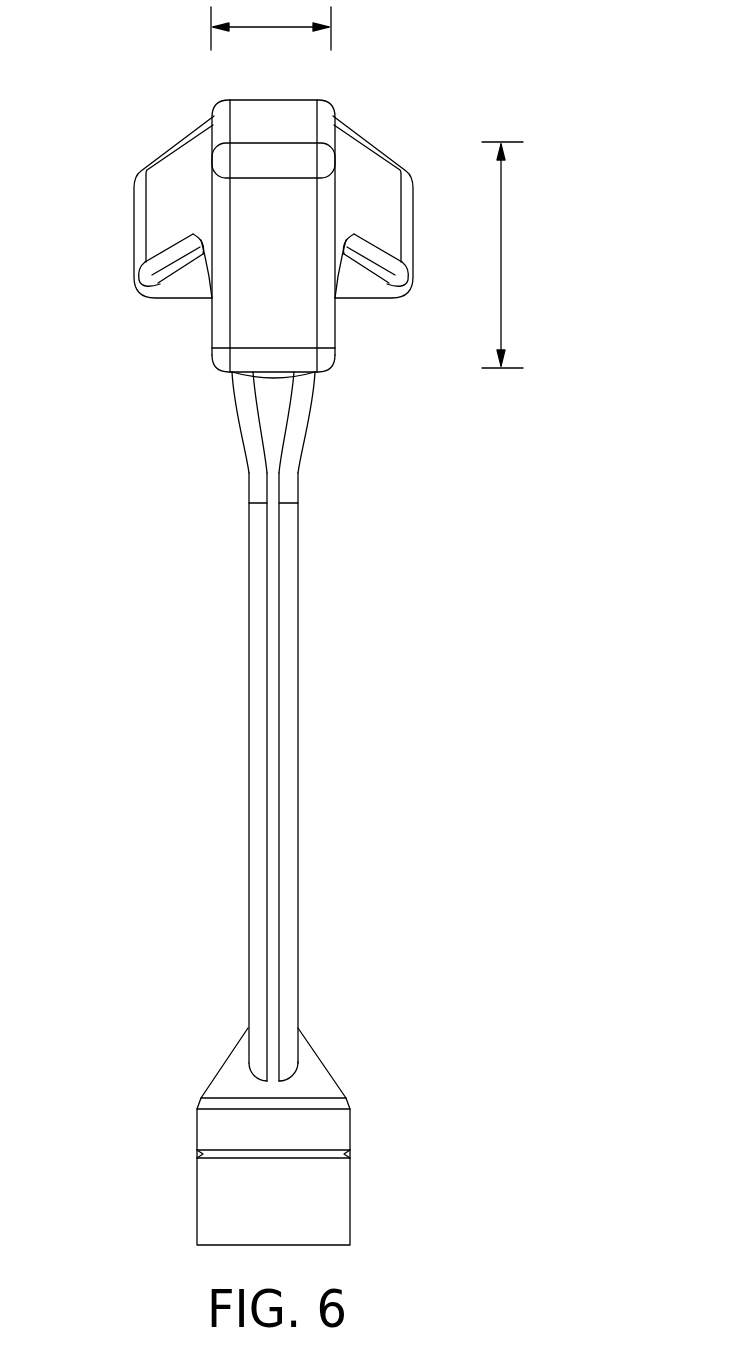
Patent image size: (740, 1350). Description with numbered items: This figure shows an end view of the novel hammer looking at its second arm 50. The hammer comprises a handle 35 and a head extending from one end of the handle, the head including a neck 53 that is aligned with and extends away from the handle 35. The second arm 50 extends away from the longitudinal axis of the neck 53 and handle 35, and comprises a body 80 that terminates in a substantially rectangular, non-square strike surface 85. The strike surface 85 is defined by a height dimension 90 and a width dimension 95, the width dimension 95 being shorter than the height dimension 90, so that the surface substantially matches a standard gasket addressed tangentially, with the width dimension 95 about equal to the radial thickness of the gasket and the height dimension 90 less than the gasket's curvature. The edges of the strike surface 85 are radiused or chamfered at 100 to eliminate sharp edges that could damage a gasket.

The handle 35 is at (353, 1193).
The second arm 50 is at (193, 382).
The neck 53 is at (300, 733).
The body 80 is at (366, 168).
The substantially rectangular, non-square strike surface 85 is at (280, 283).
The height dimension 90 is at (508, 255).
The width dimension 95 is at (271, 25).
The radiused or chamfered edges 100 is at (222, 315).